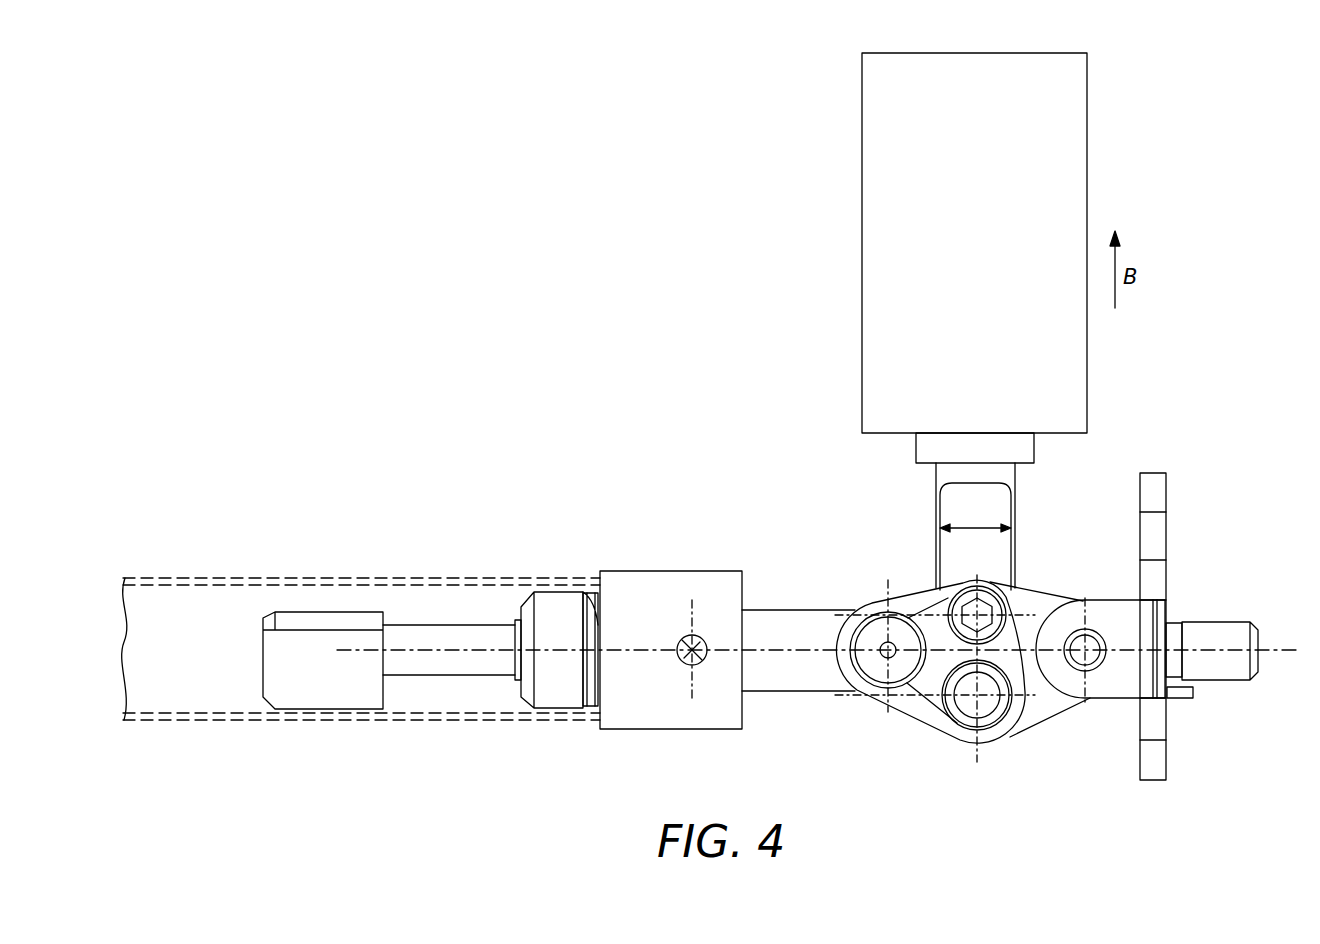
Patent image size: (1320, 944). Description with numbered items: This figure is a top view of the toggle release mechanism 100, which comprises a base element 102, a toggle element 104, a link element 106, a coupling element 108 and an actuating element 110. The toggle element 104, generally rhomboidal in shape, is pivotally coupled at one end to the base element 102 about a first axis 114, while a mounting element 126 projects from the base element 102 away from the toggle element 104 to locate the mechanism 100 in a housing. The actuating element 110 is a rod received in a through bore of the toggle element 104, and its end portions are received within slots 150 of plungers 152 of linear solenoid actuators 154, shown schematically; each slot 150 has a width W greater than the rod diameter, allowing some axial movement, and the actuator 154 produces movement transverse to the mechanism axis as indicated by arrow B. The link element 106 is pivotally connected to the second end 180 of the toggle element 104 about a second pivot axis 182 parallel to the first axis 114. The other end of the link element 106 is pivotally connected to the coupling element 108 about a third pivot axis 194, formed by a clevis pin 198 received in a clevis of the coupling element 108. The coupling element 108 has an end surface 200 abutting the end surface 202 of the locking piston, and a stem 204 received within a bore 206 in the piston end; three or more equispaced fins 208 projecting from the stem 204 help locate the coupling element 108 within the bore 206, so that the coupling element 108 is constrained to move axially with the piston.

The toggle release mechanism 100 is at (1004, 772).
The base element 102 is at (1166, 485).
The toggle element 104 is at (1040, 723).
The link element 106 is at (805, 680).
The coupling element 108 is at (660, 720).
The actuating element 110 is at (967, 708).
The first axis 114 is at (1096, 634).
The mounting element 126 is at (1233, 628).
The slot 150 is at (950, 544).
The plunger 152 is at (943, 470).
The linear solenoid actuator 154 is at (862, 223).
The second end 180 is at (907, 703).
The second pivot axis 182 is at (887, 648).
The third pivot axis 194 is at (695, 647).
The clevis pin 198 is at (700, 657).
The end surface 200 is at (583, 603).
The end surface 202 is at (603, 578).
The stem 204 is at (463, 665).
The bore 206 is at (435, 600).
The fins 208 is at (340, 695).